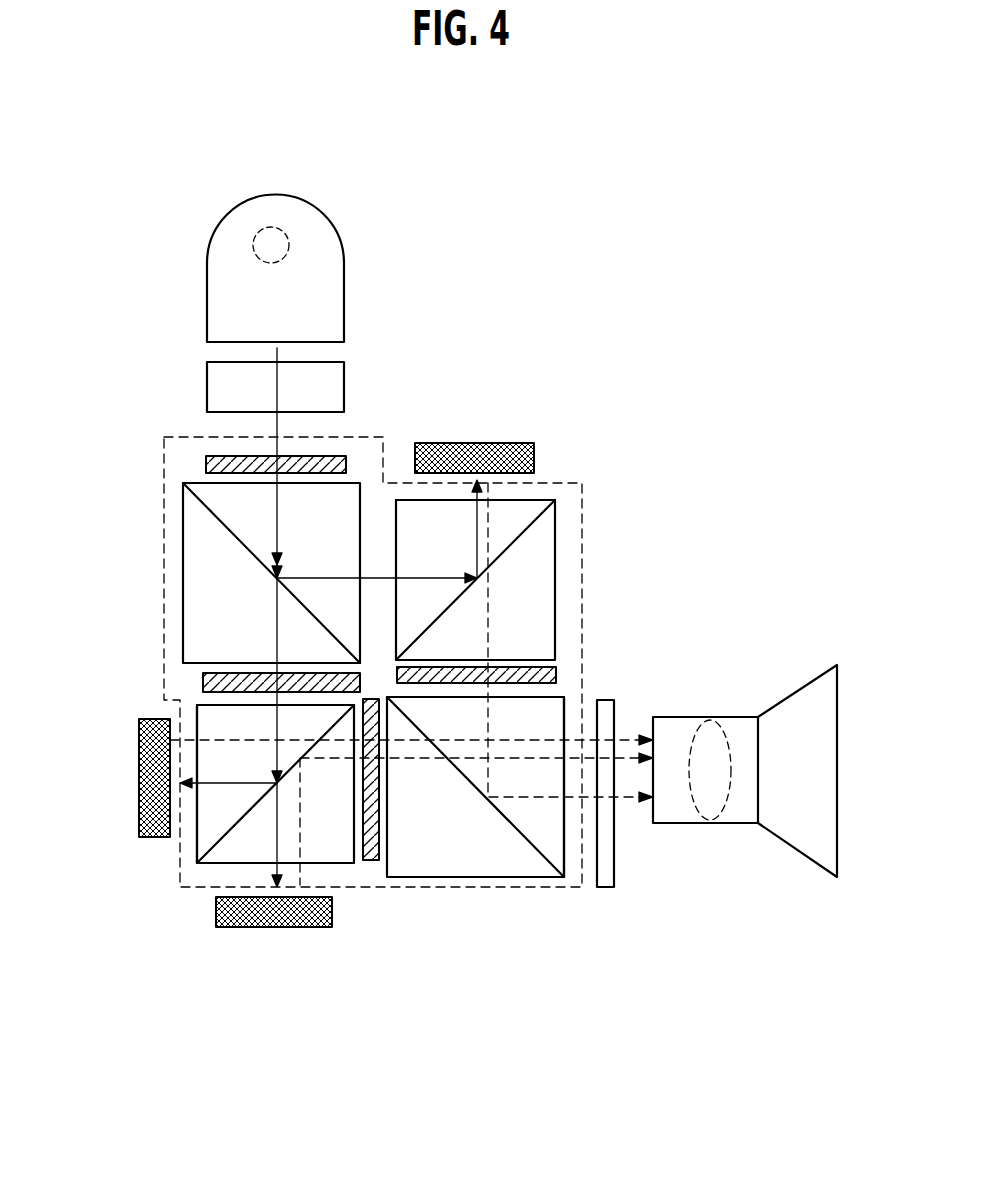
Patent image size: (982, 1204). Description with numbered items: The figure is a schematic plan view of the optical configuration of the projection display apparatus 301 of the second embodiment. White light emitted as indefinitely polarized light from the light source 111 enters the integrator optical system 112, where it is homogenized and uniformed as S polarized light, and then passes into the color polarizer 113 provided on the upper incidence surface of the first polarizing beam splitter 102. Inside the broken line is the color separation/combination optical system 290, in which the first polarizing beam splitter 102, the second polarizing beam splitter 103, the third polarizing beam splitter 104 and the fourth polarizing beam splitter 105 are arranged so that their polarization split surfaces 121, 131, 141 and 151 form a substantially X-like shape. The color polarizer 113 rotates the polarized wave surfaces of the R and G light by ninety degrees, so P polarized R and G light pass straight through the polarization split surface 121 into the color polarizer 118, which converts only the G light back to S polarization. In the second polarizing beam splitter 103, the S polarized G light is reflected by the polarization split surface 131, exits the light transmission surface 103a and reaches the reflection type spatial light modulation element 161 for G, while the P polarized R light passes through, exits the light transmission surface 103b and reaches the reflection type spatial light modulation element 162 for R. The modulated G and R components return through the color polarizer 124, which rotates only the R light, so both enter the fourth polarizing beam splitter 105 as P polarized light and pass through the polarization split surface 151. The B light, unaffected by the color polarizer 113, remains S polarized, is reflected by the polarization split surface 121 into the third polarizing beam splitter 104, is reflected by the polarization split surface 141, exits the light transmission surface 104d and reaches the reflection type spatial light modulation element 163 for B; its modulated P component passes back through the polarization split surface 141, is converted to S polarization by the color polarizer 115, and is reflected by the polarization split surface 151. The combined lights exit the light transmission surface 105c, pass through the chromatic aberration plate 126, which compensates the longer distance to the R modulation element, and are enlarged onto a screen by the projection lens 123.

The projection display apparatus 301 is at (553, 285).
The color separation/combination optical system 290 is at (163, 573).
The light source 111 is at (345, 282).
The integrator optical system 112 is at (345, 378).
The color polarizer 113 is at (205, 460).
The reflection type spatial light modulation element for B 163 is at (505, 443).
The first polarizing beam splitter 102 is at (193, 550).
The polarization split surface 121 is at (263, 563).
The color polarizer 118 is at (203, 682).
The third polarizing beam splitter 104 is at (540, 603).
The polarization split surface 141 is at (530, 527).
The light transmission surface 104d is at (537, 500).
The color polarizer 115 is at (562, 680).
The reflection type spatial light modulation element for G 161 is at (139, 780).
The second polarizing beam splitter 103 is at (213, 828).
The light transmission surface 103a is at (197, 835).
The polarization split surface 131 is at (218, 847).
The light transmission surface 103b is at (345, 865).
The reflection type spatial light modulation element for R 162 is at (279, 928).
The color polarizer 124 is at (377, 862).
The fourth polarizing beam splitter 105 is at (482, 860).
The polarization split surface 151 is at (503, 820).
The light transmission surface 105c is at (565, 713).
The chromatic aberration plate 126 is at (614, 877).
The projection lens 123 is at (707, 823).